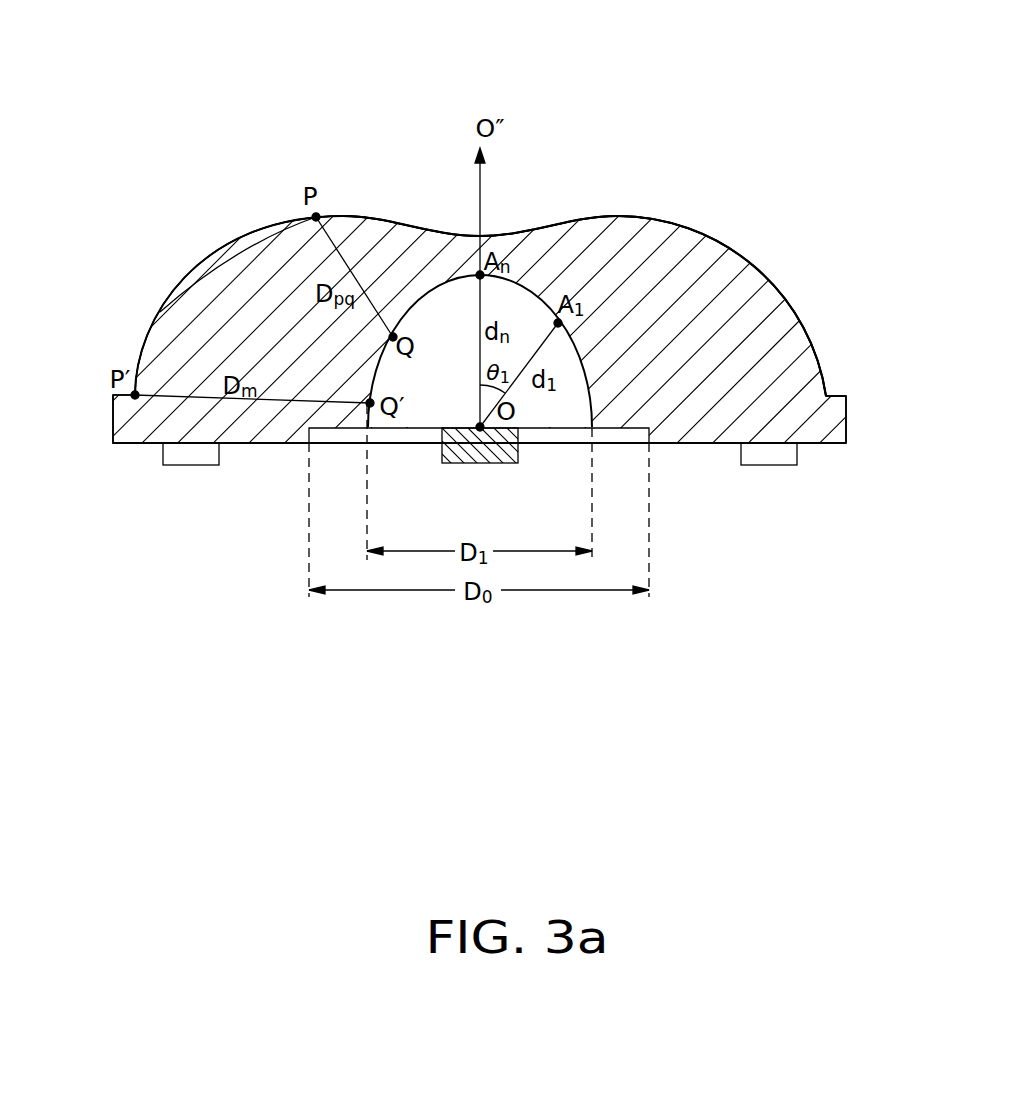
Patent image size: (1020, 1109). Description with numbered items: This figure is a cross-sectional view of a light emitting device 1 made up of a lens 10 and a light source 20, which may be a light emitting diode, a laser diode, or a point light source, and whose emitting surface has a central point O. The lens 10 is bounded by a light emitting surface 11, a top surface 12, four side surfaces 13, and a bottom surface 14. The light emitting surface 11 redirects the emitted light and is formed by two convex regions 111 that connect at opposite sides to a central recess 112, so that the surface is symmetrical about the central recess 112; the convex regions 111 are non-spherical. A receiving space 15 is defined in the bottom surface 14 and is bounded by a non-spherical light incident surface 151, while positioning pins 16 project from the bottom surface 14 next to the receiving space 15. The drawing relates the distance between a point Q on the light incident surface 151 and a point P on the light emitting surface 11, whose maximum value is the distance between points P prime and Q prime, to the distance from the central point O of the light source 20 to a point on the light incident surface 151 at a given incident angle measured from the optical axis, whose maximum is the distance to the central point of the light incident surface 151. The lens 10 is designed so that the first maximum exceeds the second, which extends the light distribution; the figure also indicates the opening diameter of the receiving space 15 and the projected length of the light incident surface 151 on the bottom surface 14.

The light emitting device 1 is at (525, 25).
The lens 10 is at (596, 172).
The light emitting surface 11 is at (722, 238).
The convex regions 111 is at (673, 220).
The central recess 112 is at (509, 236).
The light incident surface 151 is at (435, 288).
The top surface 12 is at (833, 395).
The side surfaces 13 is at (847, 430).
The bottom surface 14 is at (830, 445).
The receiving space 15 is at (620, 443).
The positioning pins 16 is at (777, 450).
The light source 20 is at (475, 450).